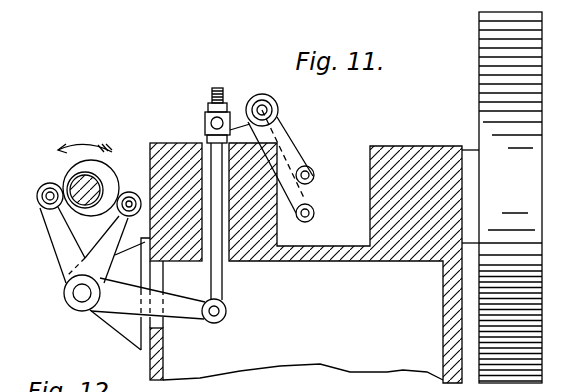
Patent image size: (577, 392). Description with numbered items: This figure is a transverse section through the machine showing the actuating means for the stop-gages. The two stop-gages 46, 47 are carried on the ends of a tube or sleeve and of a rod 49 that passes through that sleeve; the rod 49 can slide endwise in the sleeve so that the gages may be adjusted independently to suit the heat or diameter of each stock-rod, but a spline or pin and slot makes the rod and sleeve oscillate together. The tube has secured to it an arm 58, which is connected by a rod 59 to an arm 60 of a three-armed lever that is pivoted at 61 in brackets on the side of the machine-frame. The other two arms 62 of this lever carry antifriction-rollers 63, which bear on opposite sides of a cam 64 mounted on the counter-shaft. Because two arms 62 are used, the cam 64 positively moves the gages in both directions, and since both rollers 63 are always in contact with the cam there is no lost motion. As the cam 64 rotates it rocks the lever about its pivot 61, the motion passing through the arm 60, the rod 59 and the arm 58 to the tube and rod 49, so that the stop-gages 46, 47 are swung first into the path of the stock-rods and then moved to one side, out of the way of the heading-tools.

The stop-gage 46 is at (307, 197).
The stop-gage 47 is at (297, 150).
The rod 49 is at (264, 109).
The arm 58 is at (226, 113).
The rod 59 is at (215, 282).
The arm of three-armed lever 60 is at (188, 312).
The pivot 61 is at (74, 296).
The arms of three-armed lever 62 is at (65, 241).
The antifriction-rollers 63 is at (50, 187).
The cam 64 is at (105, 173).